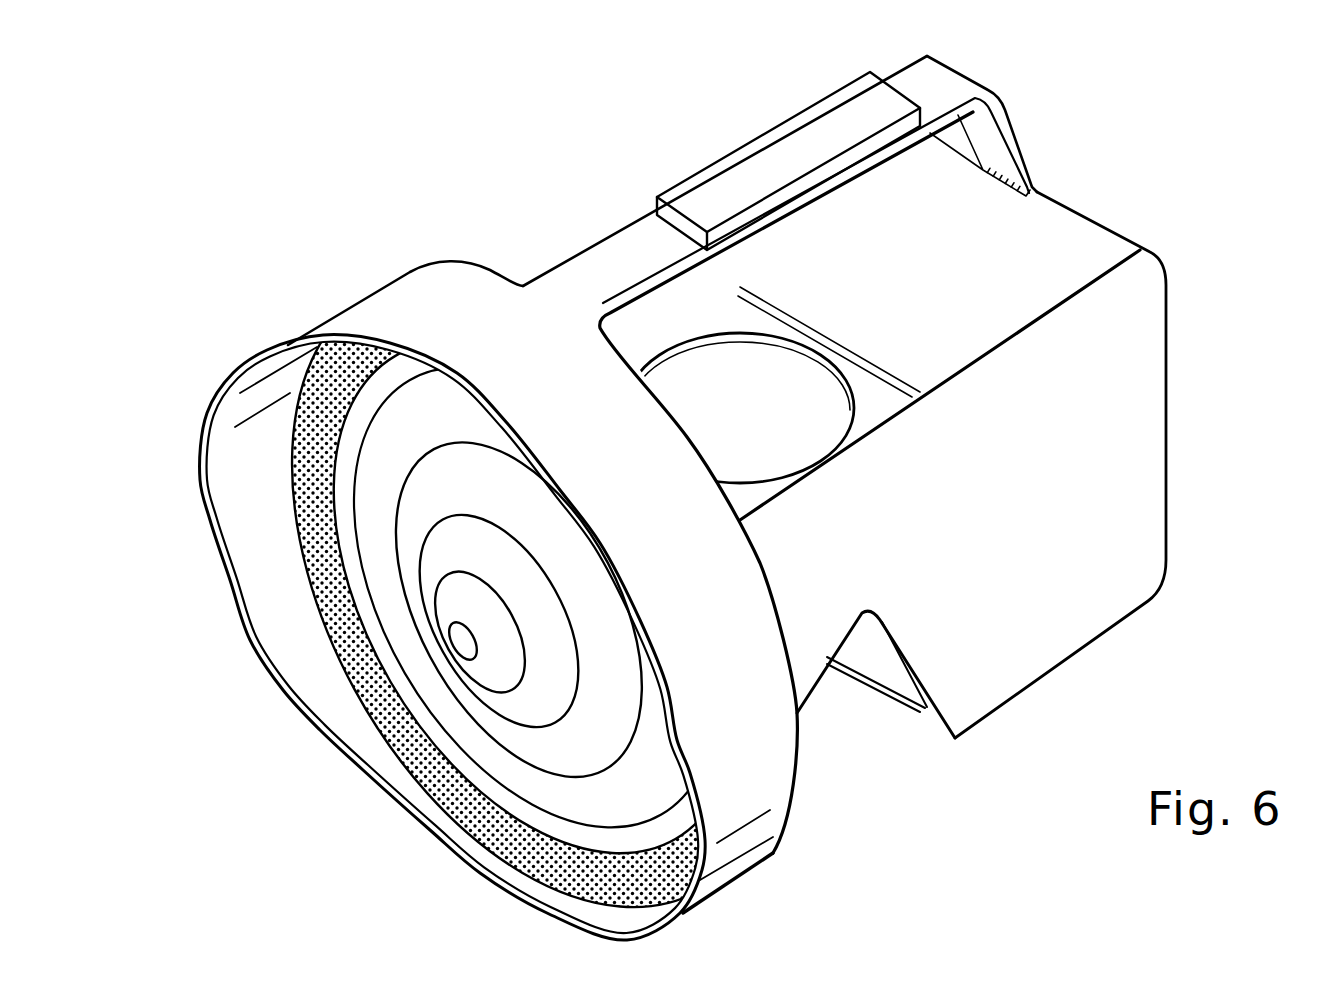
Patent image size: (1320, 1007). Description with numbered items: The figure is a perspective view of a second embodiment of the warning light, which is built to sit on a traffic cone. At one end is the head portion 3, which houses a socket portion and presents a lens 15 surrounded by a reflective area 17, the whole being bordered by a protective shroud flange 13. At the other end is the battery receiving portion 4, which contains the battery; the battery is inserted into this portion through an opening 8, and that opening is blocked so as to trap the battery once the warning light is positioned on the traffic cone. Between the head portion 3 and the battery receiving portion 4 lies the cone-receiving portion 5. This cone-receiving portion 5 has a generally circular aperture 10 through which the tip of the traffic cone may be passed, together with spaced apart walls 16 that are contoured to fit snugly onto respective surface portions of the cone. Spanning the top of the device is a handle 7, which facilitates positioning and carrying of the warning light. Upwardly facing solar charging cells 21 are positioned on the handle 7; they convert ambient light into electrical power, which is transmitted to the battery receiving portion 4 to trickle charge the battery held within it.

The head portion 3 is at (398, 248).
The battery receiving portion 4 is at (1033, 682).
The cone-receiving portion 5 is at (862, 491).
The handle 7 is at (612, 238).
The opening 8 is at (853, 643).
The generally circular aperture 10 is at (855, 410).
The protective shroud flange 13 is at (318, 322).
The lens 15 is at (430, 665).
The spaced apart walls 16 is at (847, 577).
The reflective area 17 is at (480, 833).
The solar charging cells 21 is at (697, 175).